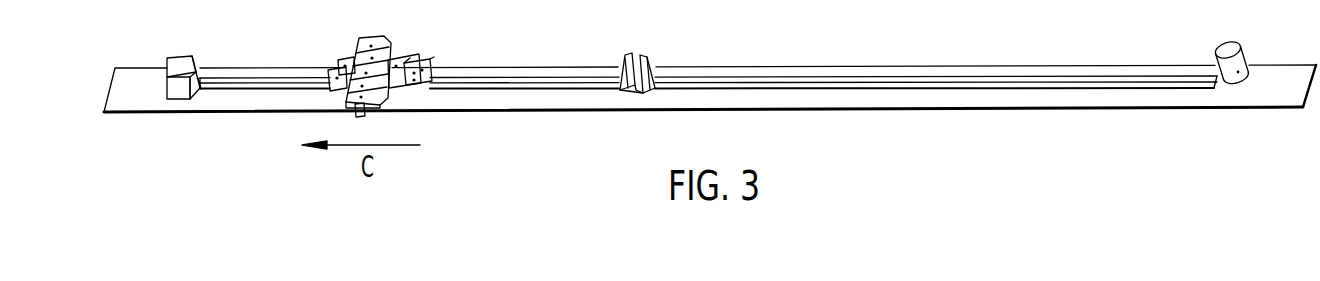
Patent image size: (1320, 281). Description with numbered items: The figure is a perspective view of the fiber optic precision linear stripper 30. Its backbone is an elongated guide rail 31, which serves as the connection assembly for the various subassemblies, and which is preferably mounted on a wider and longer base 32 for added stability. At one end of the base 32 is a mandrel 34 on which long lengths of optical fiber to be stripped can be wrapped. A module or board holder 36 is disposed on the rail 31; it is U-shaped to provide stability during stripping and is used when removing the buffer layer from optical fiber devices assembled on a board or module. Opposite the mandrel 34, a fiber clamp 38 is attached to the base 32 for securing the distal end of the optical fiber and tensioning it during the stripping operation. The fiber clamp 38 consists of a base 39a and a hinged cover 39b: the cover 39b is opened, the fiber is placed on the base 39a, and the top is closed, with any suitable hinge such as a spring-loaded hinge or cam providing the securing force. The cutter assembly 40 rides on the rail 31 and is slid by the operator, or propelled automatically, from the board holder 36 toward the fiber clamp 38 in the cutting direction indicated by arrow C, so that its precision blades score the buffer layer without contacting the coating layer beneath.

The precision linear stripper 30 is at (708, 84).
The guide rail 31 is at (870, 80).
The base 32 is at (981, 98).
The mandrel 34 is at (1219, 48).
The board holder 36 is at (627, 54).
The fiber clamp 38 is at (172, 46).
The base 39a is at (201, 78).
The hinged cover 39b is at (188, 65).
The cutter assembly 40 is at (405, 22).